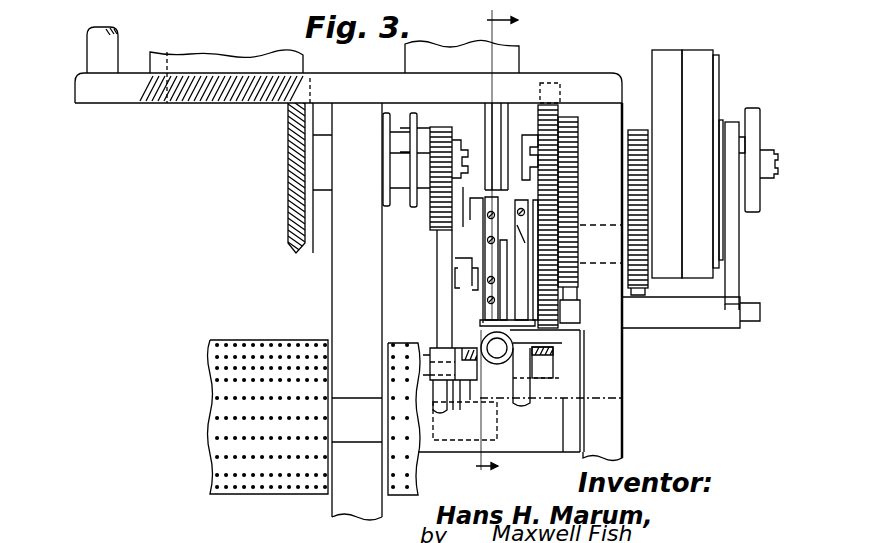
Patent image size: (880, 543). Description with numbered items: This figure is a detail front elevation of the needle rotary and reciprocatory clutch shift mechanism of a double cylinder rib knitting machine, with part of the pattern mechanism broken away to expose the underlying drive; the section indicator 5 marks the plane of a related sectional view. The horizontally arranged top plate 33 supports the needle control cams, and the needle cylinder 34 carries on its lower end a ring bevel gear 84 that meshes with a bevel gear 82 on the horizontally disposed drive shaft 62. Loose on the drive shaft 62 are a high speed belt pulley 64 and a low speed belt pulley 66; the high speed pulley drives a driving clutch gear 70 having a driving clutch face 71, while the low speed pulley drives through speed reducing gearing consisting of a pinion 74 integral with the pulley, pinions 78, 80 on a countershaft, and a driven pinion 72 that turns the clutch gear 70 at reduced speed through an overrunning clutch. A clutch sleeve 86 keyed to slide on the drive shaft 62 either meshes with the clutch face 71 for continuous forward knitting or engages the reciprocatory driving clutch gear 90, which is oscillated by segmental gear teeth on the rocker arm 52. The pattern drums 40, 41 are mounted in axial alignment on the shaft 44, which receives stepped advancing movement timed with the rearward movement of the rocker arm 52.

The top plate 33 is at (75, 95).
The needle cylinder 34 is at (188, 65).
The ring bevel gear 84 is at (155, 88).
The bevel gear 82 is at (294, 237).
The shaft 44 is at (358, 410).
The pattern drum 40 is at (272, 492).
The pattern drum 41 is at (403, 495).
The reciprocatory driving clutch gear 90 is at (437, 127).
The drive shaft 62 is at (481, 216).
The rocker arm 52 is at (441, 270).
The clutch sleeve 86 is at (506, 140).
The driving clutch face 71 is at (537, 140).
The driving clutch gear 70 is at (560, 107).
The pinion 72 is at (578, 135).
The pinion 80 is at (573, 283).
The pinion 74 is at (640, 128).
The low speed belt pulley 66 is at (665, 62).
The high speed belt pulley 64 is at (697, 62).
The pinion 78 is at (642, 282).
The section line 5- 5 is at (509, 246).